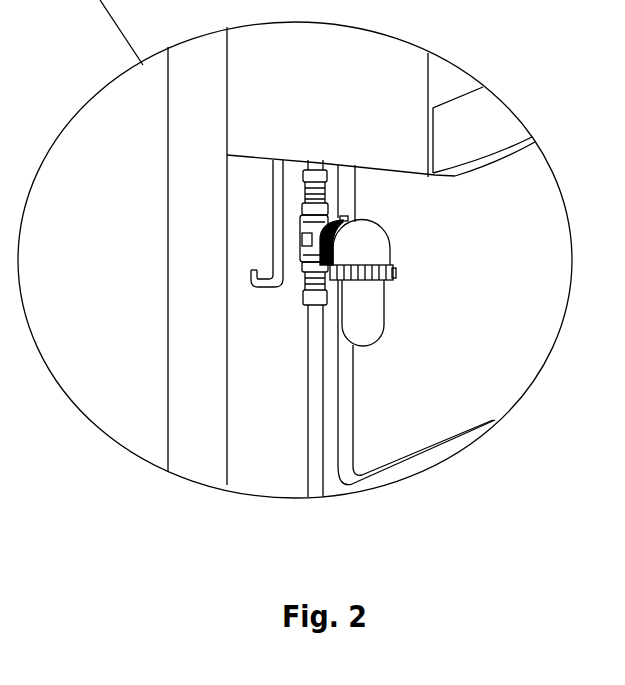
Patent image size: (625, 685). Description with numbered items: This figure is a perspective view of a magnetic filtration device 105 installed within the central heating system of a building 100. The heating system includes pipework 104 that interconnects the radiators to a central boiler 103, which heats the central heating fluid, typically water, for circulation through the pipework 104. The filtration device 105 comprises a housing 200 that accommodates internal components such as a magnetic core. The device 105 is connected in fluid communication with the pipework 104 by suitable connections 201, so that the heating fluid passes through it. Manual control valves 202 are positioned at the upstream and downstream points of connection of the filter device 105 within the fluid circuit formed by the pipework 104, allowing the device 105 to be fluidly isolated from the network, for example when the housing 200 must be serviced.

The building 100 is at (188, 169).
The central boiler 103 is at (345, 101).
The pipework 104 is at (317, 423).
The filtration device 105 is at (428, 296).
The housing 200 is at (370, 318).
The connections 201 is at (302, 236).
The manual control valves 202 is at (327, 190).